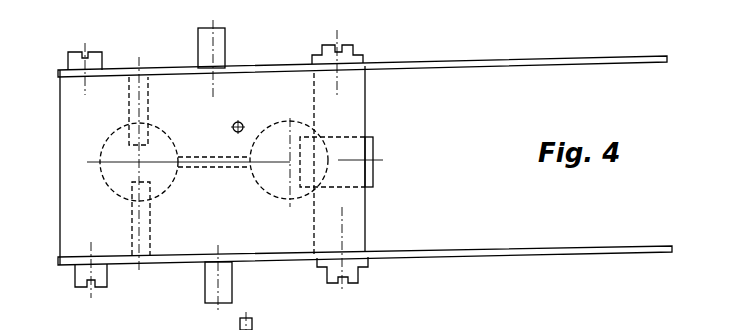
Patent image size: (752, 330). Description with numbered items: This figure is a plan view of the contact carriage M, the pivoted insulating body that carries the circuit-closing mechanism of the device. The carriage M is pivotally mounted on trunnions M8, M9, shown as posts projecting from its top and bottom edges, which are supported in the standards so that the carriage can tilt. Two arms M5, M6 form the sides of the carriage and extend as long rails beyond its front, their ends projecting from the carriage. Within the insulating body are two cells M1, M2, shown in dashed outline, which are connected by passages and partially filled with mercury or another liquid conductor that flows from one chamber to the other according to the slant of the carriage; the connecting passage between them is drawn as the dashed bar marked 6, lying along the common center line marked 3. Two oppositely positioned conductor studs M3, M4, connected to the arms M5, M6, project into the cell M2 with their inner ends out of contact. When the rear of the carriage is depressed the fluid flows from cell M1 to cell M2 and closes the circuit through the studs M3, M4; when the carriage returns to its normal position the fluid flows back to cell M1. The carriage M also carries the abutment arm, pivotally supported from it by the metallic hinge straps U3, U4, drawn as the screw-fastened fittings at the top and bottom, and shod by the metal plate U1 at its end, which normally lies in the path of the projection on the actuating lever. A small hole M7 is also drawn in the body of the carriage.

The contact carriage M is at (207, 229).
The cell M1 is at (289, 162).
The cell M2 is at (139, 162).
The conductor stud M3 is at (153, 236).
The conductor stud M4 is at (148, 100).
The arm M5 is at (418, 252).
The arm M6 is at (455, 70).
The small hole M7 is at (241, 122).
The trunnion M8 is at (232, 282).
The trunnion M9 is at (225, 35).
The metal plate U1 is at (373, 143).
The metallic hinge strap U3 is at (368, 267).
The metallic hinge strap U4 is at (363, 55).
The center line 3 is at (233, 161).
The connecting bar 6 is at (207, 168).